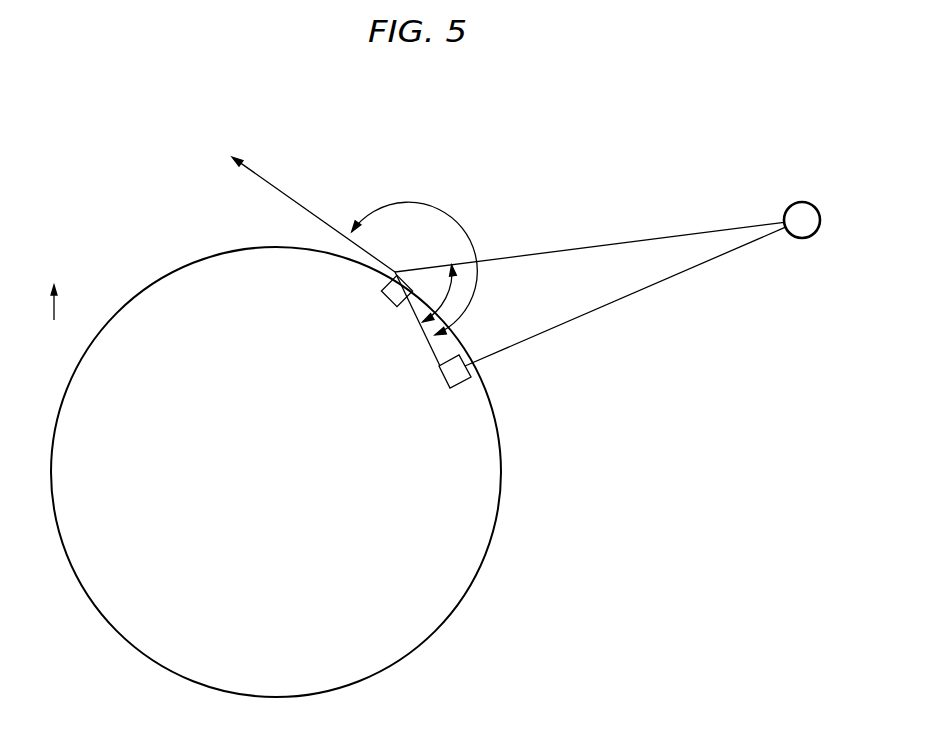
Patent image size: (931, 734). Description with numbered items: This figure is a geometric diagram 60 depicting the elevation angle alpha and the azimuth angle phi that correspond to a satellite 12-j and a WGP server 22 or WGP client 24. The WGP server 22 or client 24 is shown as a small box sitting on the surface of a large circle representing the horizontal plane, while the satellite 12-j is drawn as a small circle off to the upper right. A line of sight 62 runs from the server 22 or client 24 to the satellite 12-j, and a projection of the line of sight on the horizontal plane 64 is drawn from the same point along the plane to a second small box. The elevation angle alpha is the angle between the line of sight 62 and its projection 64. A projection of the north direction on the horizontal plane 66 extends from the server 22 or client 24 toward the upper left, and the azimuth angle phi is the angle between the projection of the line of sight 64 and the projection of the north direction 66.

The geometric diagram of line-of-sight angles 60 is at (506, 120).
The projection of the north direction on the horizontal plane 66 is at (262, 178).
The line of sight 62 is at (642, 236).
The satellite 12-j is at (793, 204).
The WGP server 22 is at (352, 306).
The WGP client 24 is at (388, 300).
The projection of the line of sight on the horizontal plane 64 is at (433, 356).